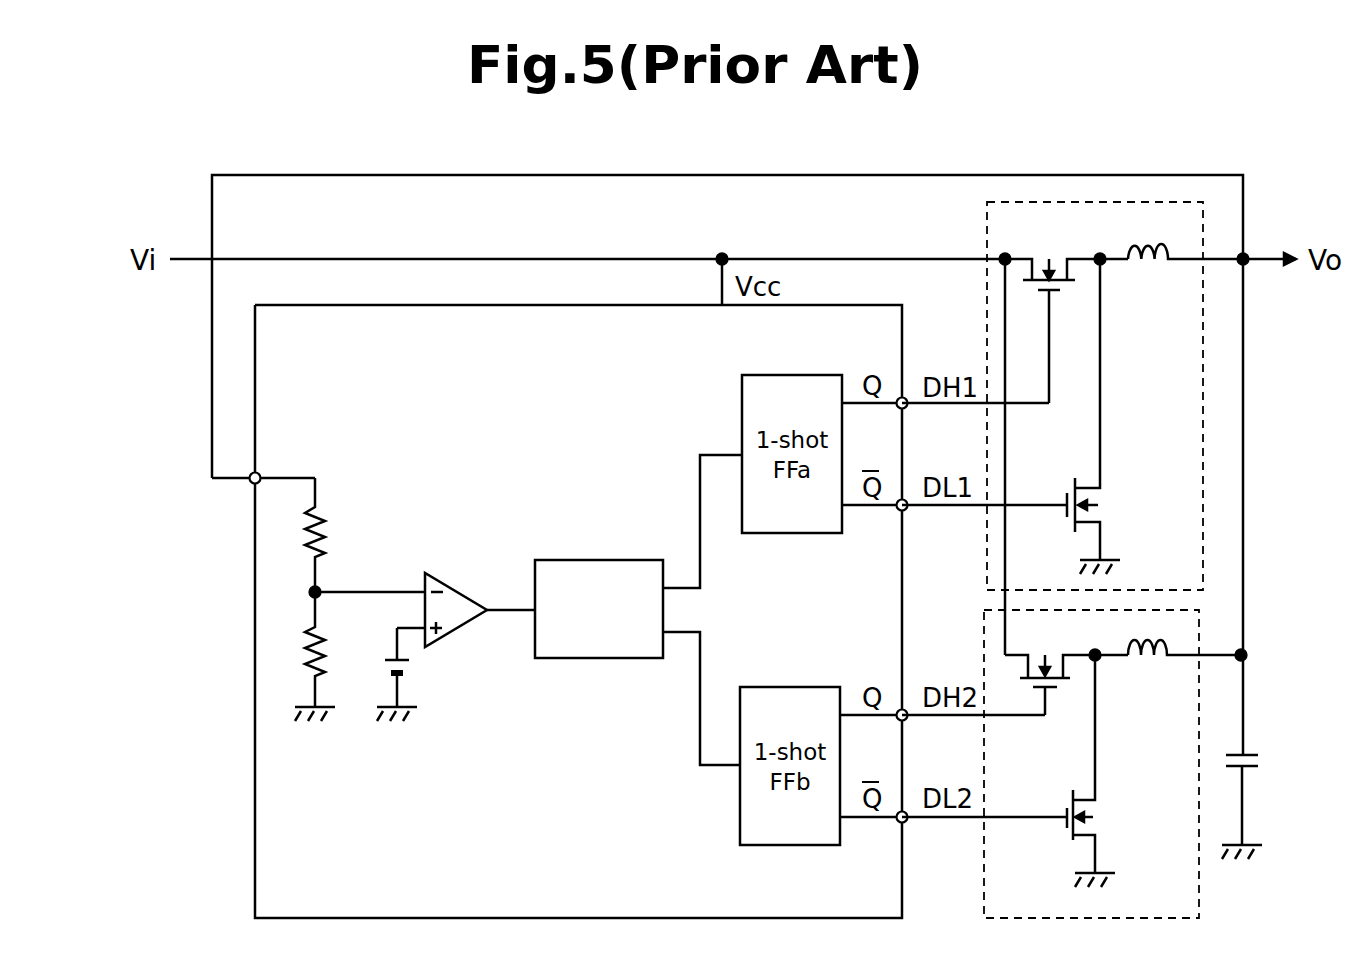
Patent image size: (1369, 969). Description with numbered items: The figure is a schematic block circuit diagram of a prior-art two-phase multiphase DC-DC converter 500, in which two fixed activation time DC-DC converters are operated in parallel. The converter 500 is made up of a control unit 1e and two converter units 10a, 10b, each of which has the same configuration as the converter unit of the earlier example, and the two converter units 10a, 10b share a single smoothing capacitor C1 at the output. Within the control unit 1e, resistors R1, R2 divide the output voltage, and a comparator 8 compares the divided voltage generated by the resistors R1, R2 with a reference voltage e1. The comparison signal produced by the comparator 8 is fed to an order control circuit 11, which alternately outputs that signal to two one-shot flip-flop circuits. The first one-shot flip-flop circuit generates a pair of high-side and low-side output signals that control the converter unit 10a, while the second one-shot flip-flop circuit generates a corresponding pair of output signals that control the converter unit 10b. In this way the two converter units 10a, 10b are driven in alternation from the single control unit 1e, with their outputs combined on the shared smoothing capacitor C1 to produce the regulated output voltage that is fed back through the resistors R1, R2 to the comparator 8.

The two-phase multiphase DC-DC converter 500 is at (1258, 168).
The comparator 8 is at (468, 596).
The order control circuit 11 is at (618, 560).
The control unit 1e is at (902, 888).
The converter unit 10a is at (1203, 515).
The converter unit 10b is at (1199, 890).
The resistor R1 is at (328, 542).
The resistor R2 is at (328, 645).
The reference voltage e1 is at (416, 689).
The smoothing capacitor C1 is at (1246, 748).